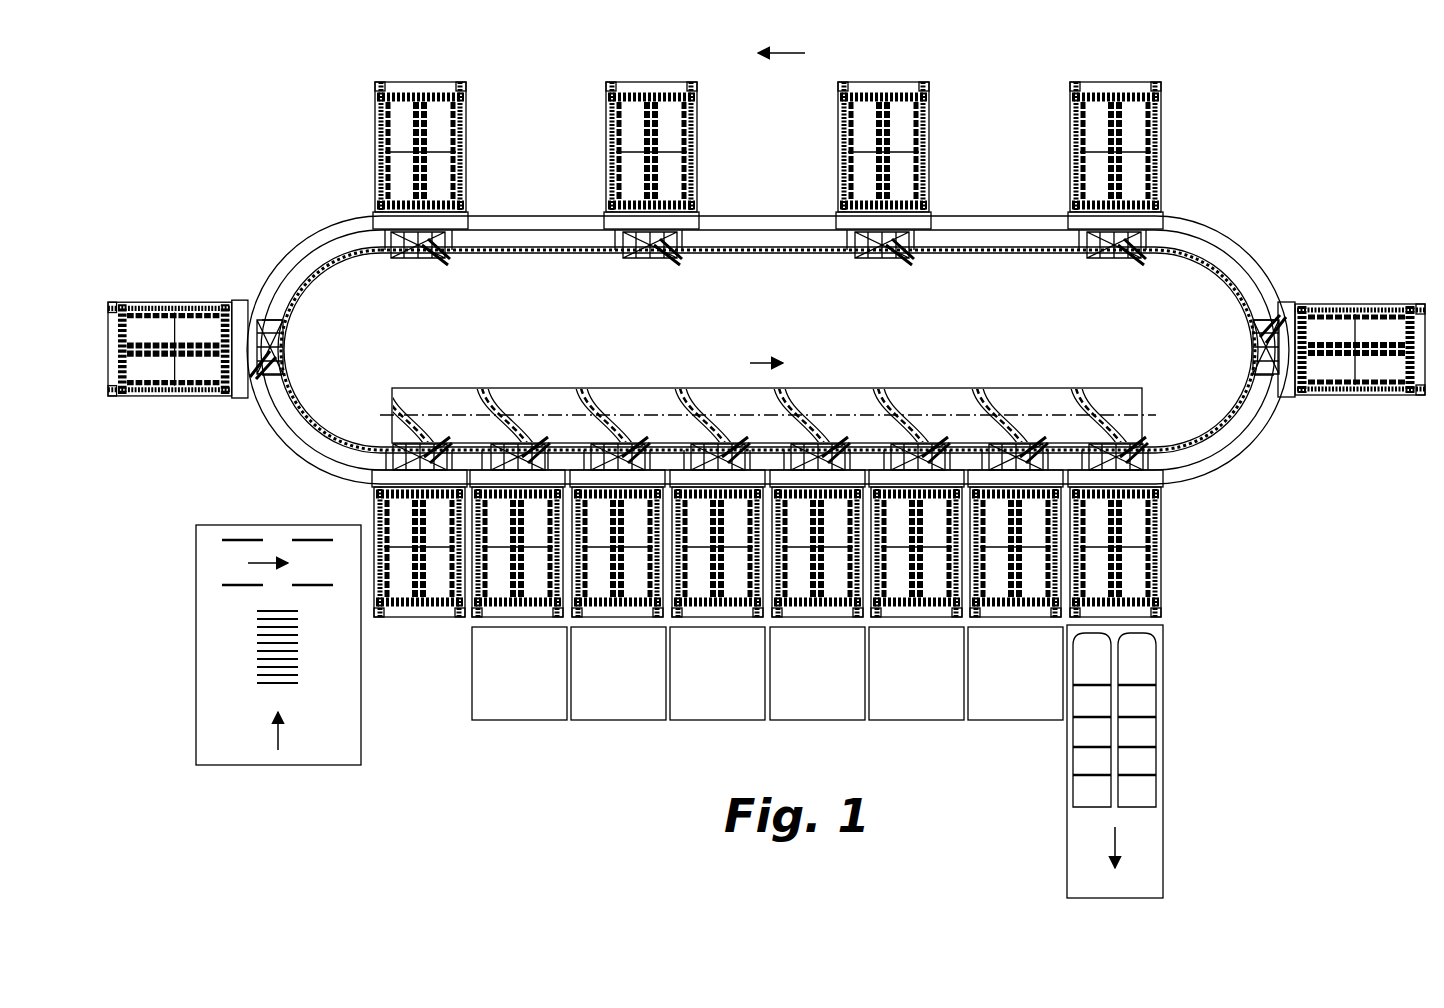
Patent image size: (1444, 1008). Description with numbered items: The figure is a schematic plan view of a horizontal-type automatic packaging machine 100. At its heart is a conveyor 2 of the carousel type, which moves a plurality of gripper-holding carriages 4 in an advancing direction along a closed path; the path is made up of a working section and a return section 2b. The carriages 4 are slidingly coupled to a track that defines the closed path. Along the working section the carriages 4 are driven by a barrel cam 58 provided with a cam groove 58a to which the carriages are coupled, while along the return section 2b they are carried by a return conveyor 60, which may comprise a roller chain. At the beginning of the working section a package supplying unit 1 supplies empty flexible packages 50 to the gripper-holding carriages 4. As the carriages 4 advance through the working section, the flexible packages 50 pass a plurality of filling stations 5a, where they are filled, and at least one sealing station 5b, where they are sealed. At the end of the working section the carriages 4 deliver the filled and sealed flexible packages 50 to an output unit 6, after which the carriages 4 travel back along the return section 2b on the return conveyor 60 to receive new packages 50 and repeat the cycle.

The horizontal-type automatic packaging machine 100 is at (268, 105).
The package supplying unit 1 is at (243, 752).
The conveyor 2 is at (243, 246).
The return section 2b is at (1004, 94).
The gripper-holding carriages 4 is at (482, 149).
The filling stations 5a is at (668, 673).
The sealing station 5b is at (966, 673).
The output unit 6 is at (1152, 862).
The flexible packages 50 is at (243, 540).
The barrel cam 58 is at (623, 397).
The cam groove 58a is at (890, 404).
The return conveyor 60 is at (505, 257).